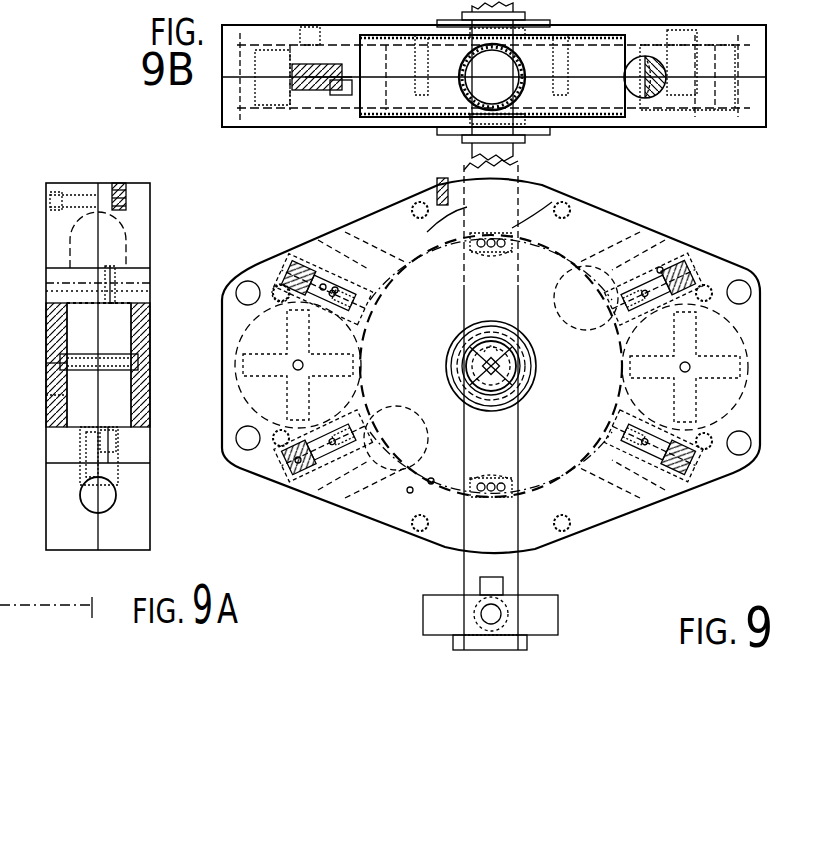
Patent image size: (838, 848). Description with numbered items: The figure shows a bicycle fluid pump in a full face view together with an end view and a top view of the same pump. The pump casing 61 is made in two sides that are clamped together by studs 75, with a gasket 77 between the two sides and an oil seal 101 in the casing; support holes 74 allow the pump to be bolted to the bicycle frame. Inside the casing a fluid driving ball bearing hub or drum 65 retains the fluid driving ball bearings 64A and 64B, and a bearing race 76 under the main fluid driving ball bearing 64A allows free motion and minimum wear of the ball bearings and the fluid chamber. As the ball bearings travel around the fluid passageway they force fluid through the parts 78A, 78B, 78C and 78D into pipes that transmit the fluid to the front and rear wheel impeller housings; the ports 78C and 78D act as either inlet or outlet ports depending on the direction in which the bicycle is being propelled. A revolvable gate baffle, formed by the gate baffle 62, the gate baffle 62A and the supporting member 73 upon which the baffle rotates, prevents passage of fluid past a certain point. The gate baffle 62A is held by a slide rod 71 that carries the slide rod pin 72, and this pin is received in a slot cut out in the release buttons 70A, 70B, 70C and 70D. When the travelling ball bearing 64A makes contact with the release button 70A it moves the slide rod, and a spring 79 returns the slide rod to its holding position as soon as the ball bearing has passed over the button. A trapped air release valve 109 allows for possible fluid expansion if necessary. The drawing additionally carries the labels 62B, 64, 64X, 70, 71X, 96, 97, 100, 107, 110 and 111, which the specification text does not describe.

In FIG. 9, the pump casing 61 is at (722, 482).
In FIG. 9A, the gate baffle 62 is at (118, 353).
In FIG. 9A, the gate baffle 62A is at (78, 315).
In FIG. 9, the gate baffle 62A is at (222, 444).
In FIG. 9, the right cylinder 62B is at (742, 360).
In FIG. 9A, the rotor 64 is at (33, 398).
In FIG. 9, the fluid driving ball bearing 64A is at (497, 500).
In FIG. 9, the fluid driving ball bearing 64B is at (518, 233).
In FIG. 9, the rotor axis 64X is at (420, 427).
In FIG. 9, the fluid driving ball bearing hub or drum 65 is at (410, 492).
In FIG. 9, the adjusting screw 70 is at (355, 302).
In FIG. 9, the release button 70A is at (362, 415).
In FIG. 9B, the release button 70B is at (357, 88).
In FIG. 9, the release button 70C is at (578, 300).
In FIG. 9, the release button 70D is at (622, 438).
In FIG. 9A, the slide rod 71 is at (113, 442).
In FIG. 9, the slide rod 71 is at (323, 285).
In FIG. 9A, the pin axis 71X is at (108, 268).
In FIG. 9A, the slide rod pin 72 is at (88, 446).
In FIG. 9, the slide rod pin 72 is at (283, 298).
In FIG. 9A, the supporting member 73 is at (56, 363).
In FIG. 9, the support holes 74 is at (742, 285).
In FIG. 9, the studs 75 is at (228, 330).
In FIG. 9, the bearing race 76 is at (431, 483).
In FIG. 9A, the gasket 77 is at (46, 585).
In FIG. 9A, the fluid port 78A is at (110, 493).
In FIG. 9, the fluid port 78A is at (343, 500).
In FIG. 9, the fluid port 78B is at (343, 233).
In FIG. 9B, the inlet or outlet port 78C is at (640, 87).
In FIG. 9, the inlet or outlet port 78C is at (641, 232).
In FIG. 9, the inlet or outlet port 78D is at (634, 498).
In FIG. 9, the spring 79 is at (298, 462).
In FIG. 9A, the pin 96 is at (92, 445).
In FIG. 9, the pin 96 is at (338, 292).
In FIG. 9, the shaft hub 97 is at (497, 382).
In FIG. 9, the bracket boss 100 is at (498, 590).
In FIG. 9B, the oil seal 101 is at (527, 135).
In FIG. 9, the bracket 107 is at (423, 628).
In FIG. 9A, the trapped air release valve 109 is at (113, 181).
In FIG. 9, the trapped air release valve 109 is at (440, 208).
In FIG. 9, the valve seat 110 is at (662, 268).
In FIG. 9A, the plug 111 is at (123, 215).